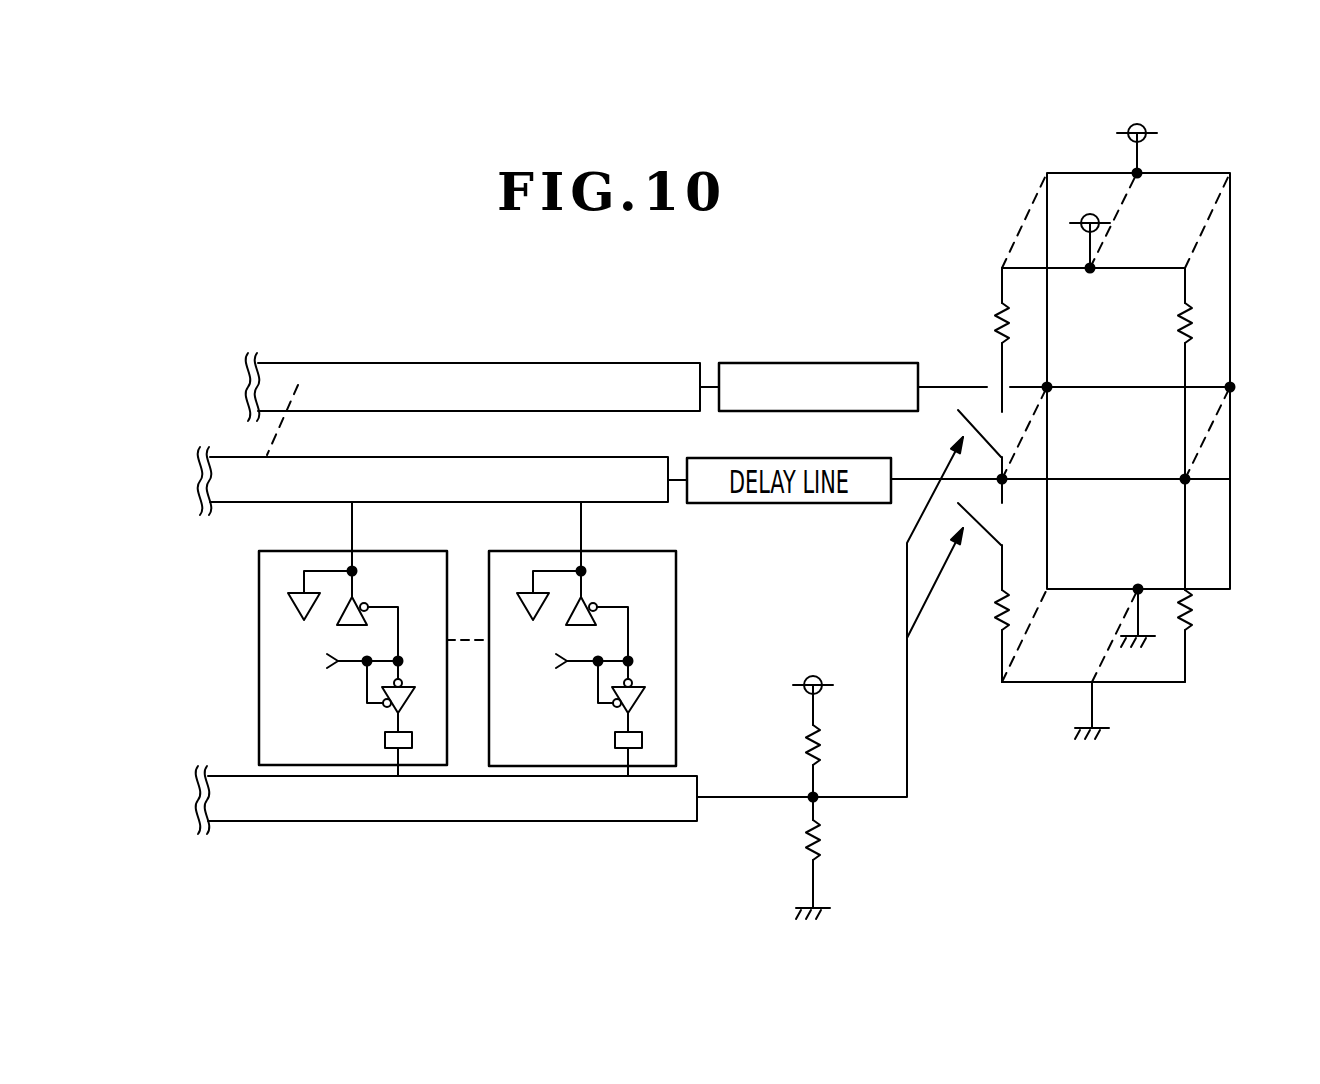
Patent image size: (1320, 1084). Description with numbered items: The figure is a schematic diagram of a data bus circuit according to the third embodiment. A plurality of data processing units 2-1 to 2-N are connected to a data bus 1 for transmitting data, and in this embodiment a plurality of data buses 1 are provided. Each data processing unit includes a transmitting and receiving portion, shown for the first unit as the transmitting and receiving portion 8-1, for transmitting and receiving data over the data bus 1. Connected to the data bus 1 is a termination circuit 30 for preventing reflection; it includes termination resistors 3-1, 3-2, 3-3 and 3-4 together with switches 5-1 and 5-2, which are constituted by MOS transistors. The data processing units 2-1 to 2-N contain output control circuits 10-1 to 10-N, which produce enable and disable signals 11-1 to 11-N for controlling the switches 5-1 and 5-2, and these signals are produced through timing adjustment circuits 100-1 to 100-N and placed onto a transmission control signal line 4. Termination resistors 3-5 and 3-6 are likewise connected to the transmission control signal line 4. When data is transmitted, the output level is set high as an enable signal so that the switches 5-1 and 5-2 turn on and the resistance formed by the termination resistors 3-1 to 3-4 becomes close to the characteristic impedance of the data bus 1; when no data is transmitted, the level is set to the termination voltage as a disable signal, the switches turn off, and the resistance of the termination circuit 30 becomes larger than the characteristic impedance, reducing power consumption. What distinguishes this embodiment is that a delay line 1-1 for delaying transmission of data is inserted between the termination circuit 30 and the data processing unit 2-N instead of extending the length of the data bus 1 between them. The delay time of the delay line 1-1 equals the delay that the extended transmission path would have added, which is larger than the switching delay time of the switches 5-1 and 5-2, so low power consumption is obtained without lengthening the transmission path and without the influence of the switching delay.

The data bus 1 is at (437, 363).
The delay line 1-1 is at (780, 363).
The data processing unit 2-1 is at (360, 639).
The data processing unit 2-N is at (628, 639).
The transmitting and receiving portion 8-1 is at (368, 603).
The output control circuit 10-1 is at (366, 700).
The output control circuit 10-N is at (646, 700).
The enable and disable signal 11-1 is at (414, 700).
The enable and disable signal 11-N is at (590, 667).
The timing adjustment circuit 100-1 is at (385, 745).
The timing adjustment circuit 100-N is at (642, 740).
The transmission control signal line 4 is at (482, 821).
The termination circuit 30 is at (1112, 404).
The termination resistor 3-1 is at (1000, 305).
The termination resistor 3-2 is at (997, 630).
The termination resistor 3-3 is at (1188, 305).
The termination resistor 3-4 is at (1192, 631).
The termination resistor 3-5 is at (815, 727).
The termination resistor 3-6 is at (818, 858).
The switch 5-1 is at (987, 438).
The switch 5-2 is at (987, 535).